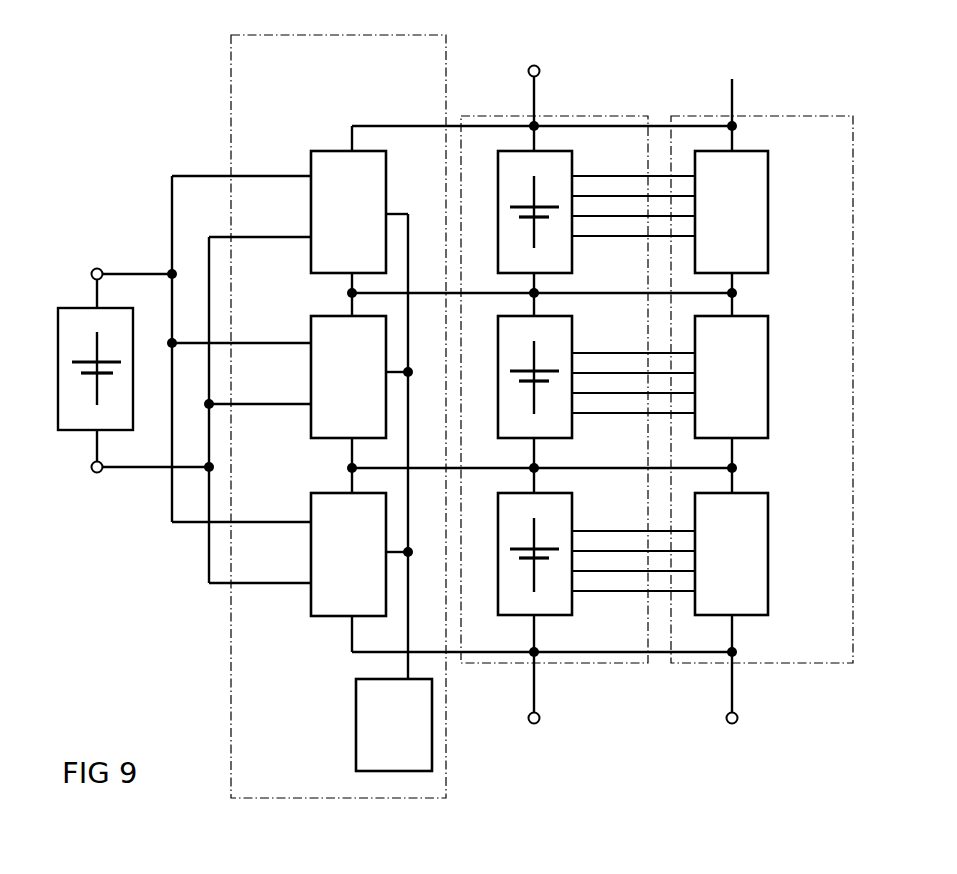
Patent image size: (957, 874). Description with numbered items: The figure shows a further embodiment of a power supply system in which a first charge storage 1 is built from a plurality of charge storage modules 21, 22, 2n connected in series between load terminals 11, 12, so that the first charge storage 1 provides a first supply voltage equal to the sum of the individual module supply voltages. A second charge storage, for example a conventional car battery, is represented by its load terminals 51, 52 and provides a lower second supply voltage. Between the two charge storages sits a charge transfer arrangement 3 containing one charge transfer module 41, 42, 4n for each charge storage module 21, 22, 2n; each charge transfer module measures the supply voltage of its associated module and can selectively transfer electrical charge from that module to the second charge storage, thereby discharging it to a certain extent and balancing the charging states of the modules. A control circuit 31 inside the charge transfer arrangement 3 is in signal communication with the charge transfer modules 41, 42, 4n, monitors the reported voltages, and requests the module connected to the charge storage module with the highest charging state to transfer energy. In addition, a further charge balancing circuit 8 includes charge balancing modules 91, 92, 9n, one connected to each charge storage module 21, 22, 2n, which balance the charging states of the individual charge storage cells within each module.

The first charge storage 1 is at (498, 112).
The charge transfer arrangement 3 is at (325, 113).
The further charge balancing circuit 8 is at (696, 112).
The load terminal 11 is at (535, 65).
The load terminal 12 is at (537, 725).
The charge storage module 21 is at (573, 162).
The charge storage module 22 is at (573, 329).
The charge storage module 2n is at (575, 504).
The control circuit 31 is at (355, 726).
The charge transfer module 41 is at (310, 213).
The charge transfer module 42 is at (310, 386).
The charge transfer module 4n is at (309, 560).
The load terminal 51 is at (97, 265).
The load terminal 52 is at (97, 475).
The charge balancing module 91 is at (770, 206).
The charge balancing module 92 is at (770, 367).
The charge balancing module 9n is at (770, 548).